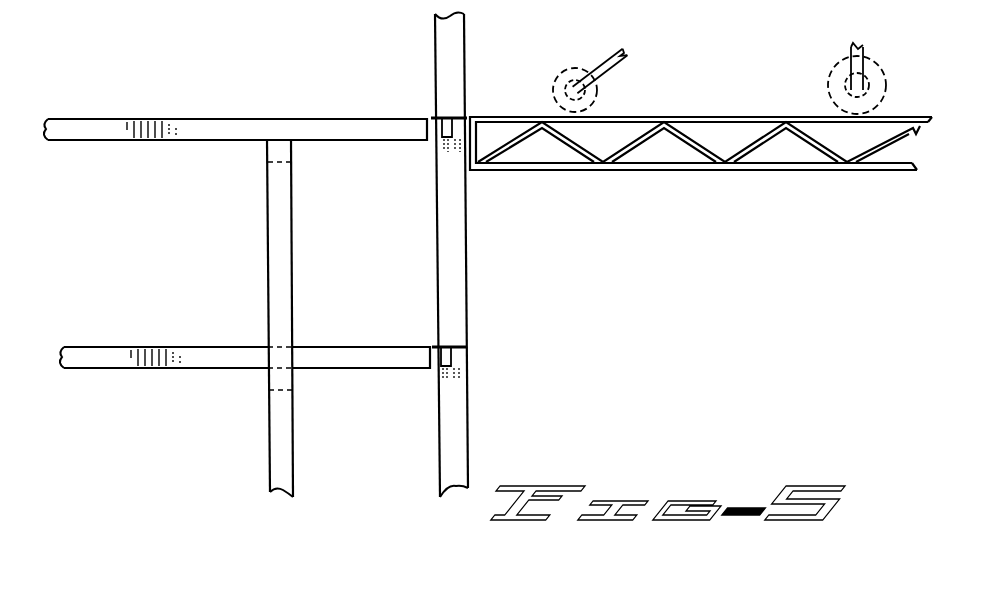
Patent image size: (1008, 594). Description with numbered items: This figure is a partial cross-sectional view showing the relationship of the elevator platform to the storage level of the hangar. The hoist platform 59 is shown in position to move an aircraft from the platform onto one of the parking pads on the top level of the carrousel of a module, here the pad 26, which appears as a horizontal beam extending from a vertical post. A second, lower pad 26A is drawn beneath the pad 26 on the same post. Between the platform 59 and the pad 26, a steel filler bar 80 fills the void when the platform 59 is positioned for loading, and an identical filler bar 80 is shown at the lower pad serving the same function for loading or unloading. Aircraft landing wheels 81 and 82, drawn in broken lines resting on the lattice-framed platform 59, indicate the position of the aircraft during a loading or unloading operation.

The parking pad 26 is at (412, 119).
The lower cross beam 26A is at (352, 369).
The hoist platform 59 is at (639, 171).
The steel filler bar 80 is at (452, 118).
The aircraft landing wheel 81 is at (598, 101).
The aircraft landing wheel 82 is at (828, 92).